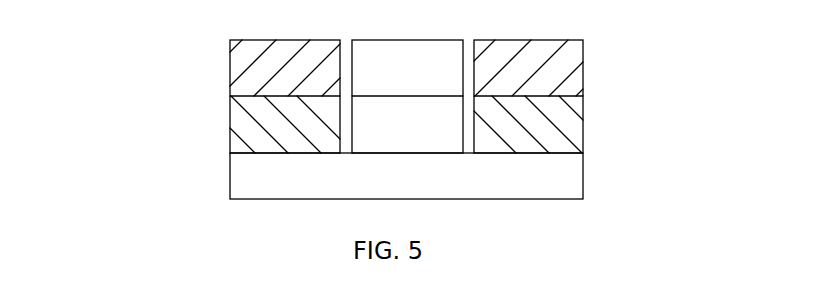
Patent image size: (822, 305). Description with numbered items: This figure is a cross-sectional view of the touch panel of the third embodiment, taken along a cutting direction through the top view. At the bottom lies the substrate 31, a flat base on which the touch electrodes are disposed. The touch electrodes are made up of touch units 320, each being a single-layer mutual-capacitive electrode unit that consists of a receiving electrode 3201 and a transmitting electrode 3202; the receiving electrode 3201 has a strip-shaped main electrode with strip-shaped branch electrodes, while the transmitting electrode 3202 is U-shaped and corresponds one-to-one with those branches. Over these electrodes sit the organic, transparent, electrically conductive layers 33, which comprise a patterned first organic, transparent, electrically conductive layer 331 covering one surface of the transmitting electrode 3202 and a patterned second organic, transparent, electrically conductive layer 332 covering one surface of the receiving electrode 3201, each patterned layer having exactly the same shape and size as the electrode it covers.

The substrate 31 is at (551, 174).
The touch unit 320 is at (82, 100).
The receiving electrode 3201 is at (243, 117).
The transmitting electrode 3202 is at (385, 148).
The organic, transparent, electrically conductive layer 33 is at (680, 43).
The patterned first organic, transparent, electrically conductive layer 331 is at (430, 78).
The patterned second organic, transparent, electrically conductive layer 332 is at (553, 53).